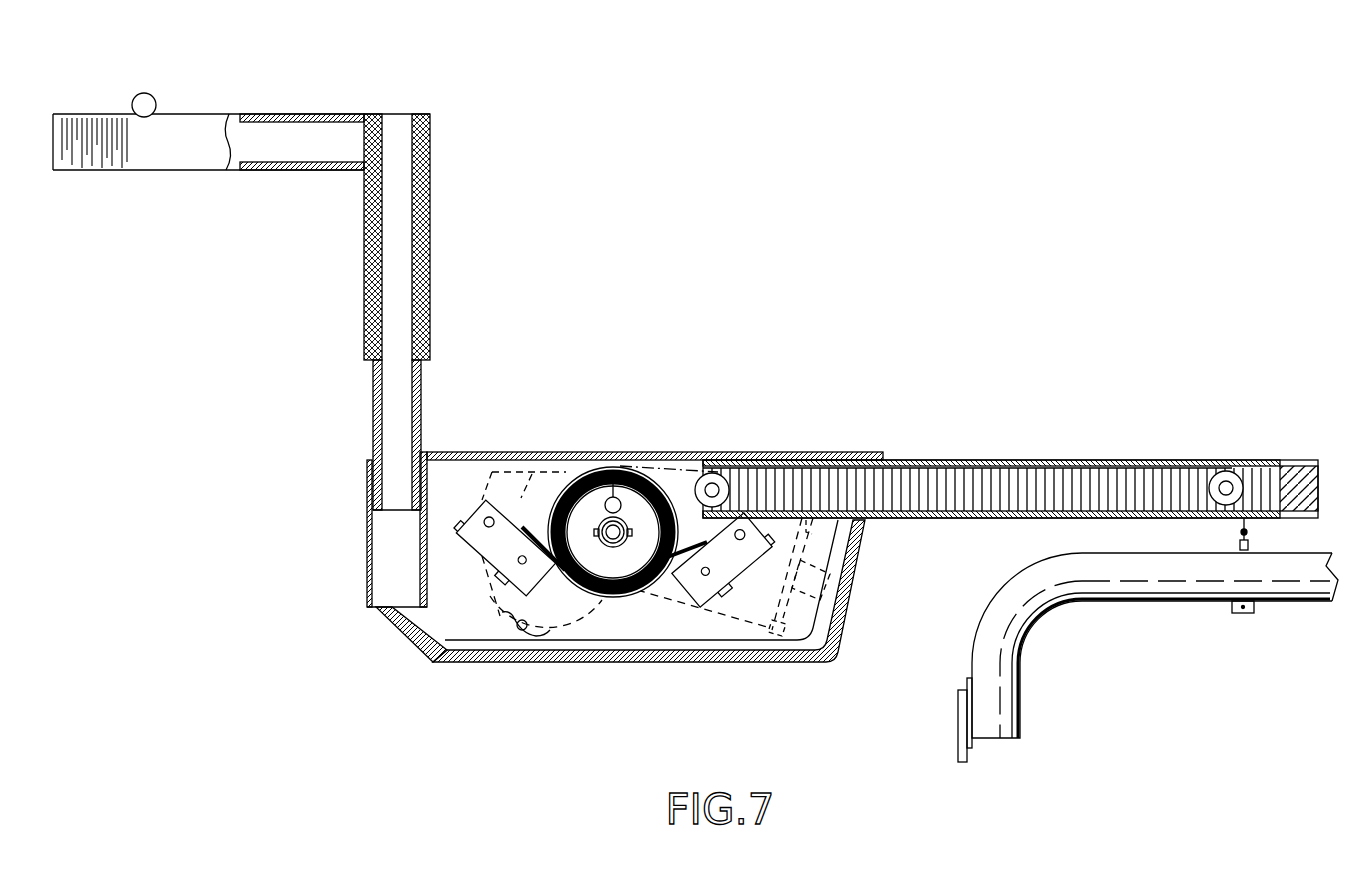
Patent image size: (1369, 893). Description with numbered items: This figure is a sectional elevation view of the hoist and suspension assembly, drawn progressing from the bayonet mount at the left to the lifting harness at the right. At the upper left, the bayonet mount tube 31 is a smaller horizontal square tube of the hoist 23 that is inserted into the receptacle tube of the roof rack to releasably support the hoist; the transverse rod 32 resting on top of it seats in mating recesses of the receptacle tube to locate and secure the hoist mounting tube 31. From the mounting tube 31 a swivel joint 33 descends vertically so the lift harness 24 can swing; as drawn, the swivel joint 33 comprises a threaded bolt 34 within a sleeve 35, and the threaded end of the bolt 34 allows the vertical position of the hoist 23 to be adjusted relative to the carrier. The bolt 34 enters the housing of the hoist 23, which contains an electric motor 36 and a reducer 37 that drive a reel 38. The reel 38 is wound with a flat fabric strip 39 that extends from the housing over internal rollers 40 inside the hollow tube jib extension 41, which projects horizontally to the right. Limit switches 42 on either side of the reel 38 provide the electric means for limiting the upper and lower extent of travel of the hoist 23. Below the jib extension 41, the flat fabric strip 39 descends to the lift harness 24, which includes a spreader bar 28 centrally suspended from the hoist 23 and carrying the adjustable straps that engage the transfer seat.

The hoist 23 is at (634, 432).
The lift harness 24 is at (1020, 566).
The spreader bar 28 is at (1322, 551).
The bayonet mount tube 31 is at (150, 172).
The transverse rod 32 is at (140, 94).
The swivel joint 33 is at (448, 322).
The threaded bolt 34 is at (372, 428).
The sleeve 35 is at (428, 222).
The electric motor 36 is at (800, 553).
The reducer 37 is at (500, 613).
The reel 38 is at (588, 478).
The flat fabric strip 39 is at (1000, 458).
The internal rollers 40 is at (713, 471).
The hollow tube jib extension 41 is at (1140, 458).
The limit switches 42 is at (478, 560).